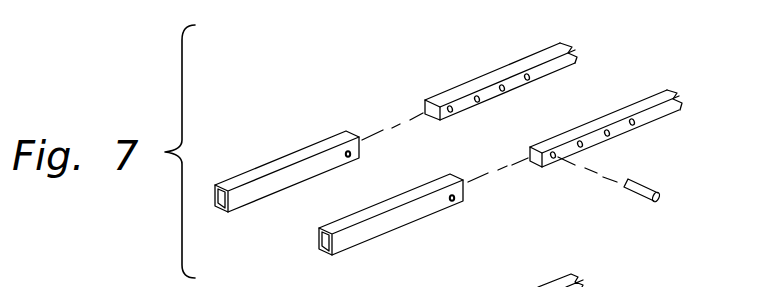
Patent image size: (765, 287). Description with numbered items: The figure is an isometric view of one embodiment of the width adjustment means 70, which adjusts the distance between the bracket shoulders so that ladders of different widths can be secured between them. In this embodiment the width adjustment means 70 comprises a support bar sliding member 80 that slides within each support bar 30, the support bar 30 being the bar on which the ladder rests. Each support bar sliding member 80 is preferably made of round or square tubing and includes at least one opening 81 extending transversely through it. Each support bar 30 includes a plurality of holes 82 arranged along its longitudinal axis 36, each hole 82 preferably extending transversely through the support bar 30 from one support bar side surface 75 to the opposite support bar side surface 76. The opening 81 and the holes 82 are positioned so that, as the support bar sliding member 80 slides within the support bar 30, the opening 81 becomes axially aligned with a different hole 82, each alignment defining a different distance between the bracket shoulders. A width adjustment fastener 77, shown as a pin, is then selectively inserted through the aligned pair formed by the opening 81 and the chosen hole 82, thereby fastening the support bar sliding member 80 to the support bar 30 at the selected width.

The support bar 30 is at (544, 44).
The longitudinal axis 36 is at (398, 125).
The width adjustment means 70 is at (313, 84).
The support bar side surface 75 is at (547, 72).
The support bar side surface 76 is at (512, 63).
The width adjustment fastener 77 is at (638, 200).
The support bar sliding member 80 is at (267, 195).
The opening 81 is at (350, 158).
The holes 82 is at (480, 103).